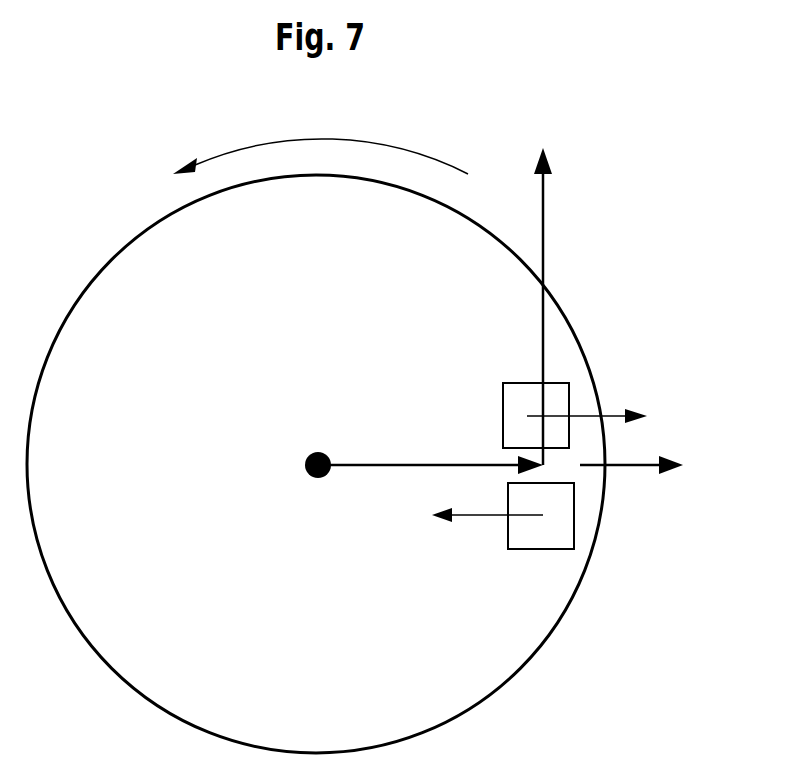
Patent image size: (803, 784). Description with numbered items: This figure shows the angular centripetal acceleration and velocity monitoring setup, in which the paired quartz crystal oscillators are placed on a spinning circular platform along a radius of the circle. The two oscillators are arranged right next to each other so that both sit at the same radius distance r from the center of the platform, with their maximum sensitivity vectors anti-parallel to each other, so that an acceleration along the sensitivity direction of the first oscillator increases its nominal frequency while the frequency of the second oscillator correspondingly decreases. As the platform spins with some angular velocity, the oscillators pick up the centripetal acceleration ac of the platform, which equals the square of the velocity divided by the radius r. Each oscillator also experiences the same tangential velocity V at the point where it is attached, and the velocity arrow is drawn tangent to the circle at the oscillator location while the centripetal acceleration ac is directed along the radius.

The tangential velocity V is at (544, 280).
The radius r is at (430, 444).
The centripetal acceleration ac is at (650, 475).